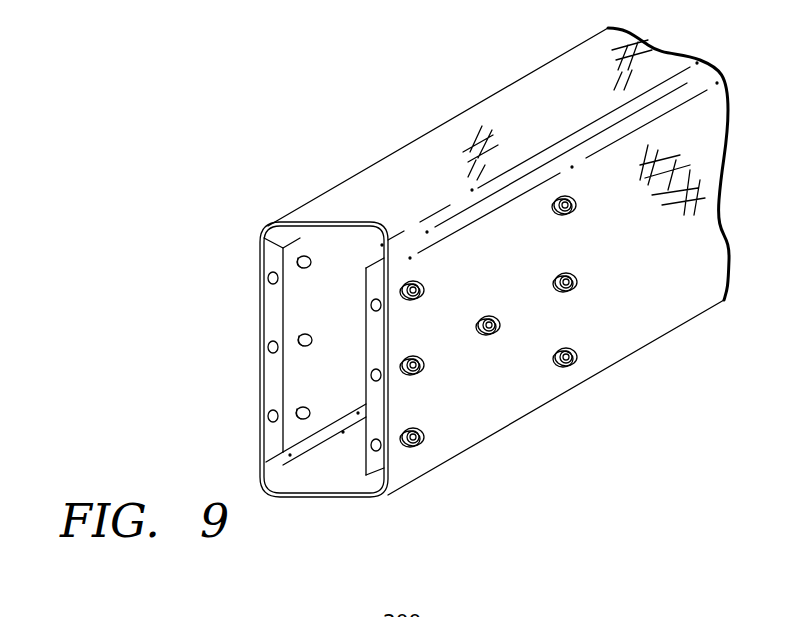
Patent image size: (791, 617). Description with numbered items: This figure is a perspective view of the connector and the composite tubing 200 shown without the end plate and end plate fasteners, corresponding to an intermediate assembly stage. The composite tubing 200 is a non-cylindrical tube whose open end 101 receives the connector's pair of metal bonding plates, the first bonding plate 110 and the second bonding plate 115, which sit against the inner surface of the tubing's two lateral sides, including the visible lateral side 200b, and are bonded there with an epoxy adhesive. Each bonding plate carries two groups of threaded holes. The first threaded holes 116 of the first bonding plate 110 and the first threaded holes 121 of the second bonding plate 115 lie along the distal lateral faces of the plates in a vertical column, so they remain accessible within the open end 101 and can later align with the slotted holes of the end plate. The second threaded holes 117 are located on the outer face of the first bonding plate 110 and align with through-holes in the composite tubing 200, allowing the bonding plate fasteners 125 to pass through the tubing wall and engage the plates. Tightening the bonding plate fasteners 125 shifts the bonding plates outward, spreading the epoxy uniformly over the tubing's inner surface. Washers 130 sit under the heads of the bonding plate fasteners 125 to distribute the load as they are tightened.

The composite tubing 200 is at (420, 132).
The lateral side 200b is at (458, 436).
The open end 101 is at (314, 489).
The first bonding plate 110 is at (275, 310).
The second bonding plate 115 is at (372, 393).
The first threaded holes 116 is at (270, 412).
The second threaded holes 117 is at (298, 233).
The first threaded holes 121 is at (364, 446).
The bonding plate fasteners 125 is at (425, 287).
The washers 130 is at (562, 197).